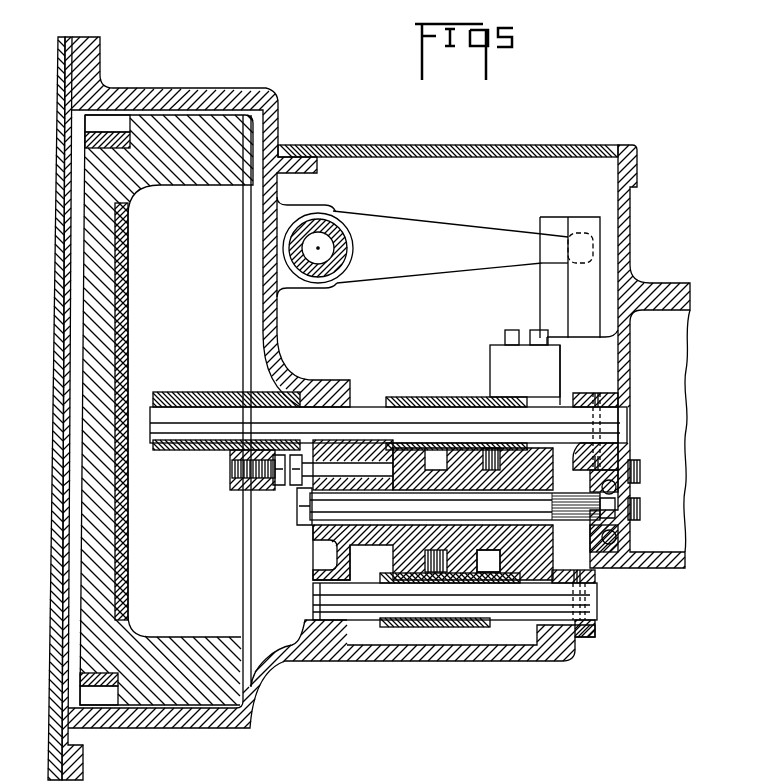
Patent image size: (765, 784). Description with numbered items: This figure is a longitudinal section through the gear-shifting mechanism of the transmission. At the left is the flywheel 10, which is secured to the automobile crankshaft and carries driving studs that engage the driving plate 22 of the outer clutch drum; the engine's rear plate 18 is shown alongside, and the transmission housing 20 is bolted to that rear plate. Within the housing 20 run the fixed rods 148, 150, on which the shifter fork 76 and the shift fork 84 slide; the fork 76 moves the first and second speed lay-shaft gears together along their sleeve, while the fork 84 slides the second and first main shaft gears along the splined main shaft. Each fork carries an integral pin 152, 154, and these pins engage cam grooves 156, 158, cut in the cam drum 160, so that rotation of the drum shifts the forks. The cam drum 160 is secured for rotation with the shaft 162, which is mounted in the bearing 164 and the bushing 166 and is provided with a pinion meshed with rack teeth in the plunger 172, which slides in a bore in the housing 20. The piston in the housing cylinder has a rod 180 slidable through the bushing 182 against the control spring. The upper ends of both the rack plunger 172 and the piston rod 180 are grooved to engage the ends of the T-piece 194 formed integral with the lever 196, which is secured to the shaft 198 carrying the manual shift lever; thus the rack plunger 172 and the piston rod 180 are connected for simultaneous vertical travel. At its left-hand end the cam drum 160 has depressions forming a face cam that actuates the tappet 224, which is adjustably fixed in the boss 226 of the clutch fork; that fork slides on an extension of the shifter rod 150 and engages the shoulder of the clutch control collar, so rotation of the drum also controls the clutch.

The flywheel 10 is at (163, 643).
The rear plate 18 is at (57, 255).
The transmission housing 20 is at (158, 92).
The driving plate 22 is at (122, 555).
The shifter fork 76 is at (411, 624).
The shift fork 84 is at (392, 397).
The fixed rod 148 is at (599, 609).
The fixed rod 150 is at (178, 413).
The pin 152 is at (432, 563).
The pin 154 is at (496, 445).
The cam groove 156 is at (433, 453).
The cam groove 158 is at (490, 563).
The cam drum 160 is at (538, 548).
The shaft 162 is at (334, 550).
The bearing 164 is at (630, 540).
The bushing 166 is at (333, 527).
The plunger 172 is at (588, 286).
The rod 180 is at (541, 292).
The bushing 182 is at (505, 336).
The T-piece 194 is at (552, 235).
The lever 196 is at (421, 228).
The shaft 198 is at (341, 232).
The tappet 224 is at (303, 488).
The boss 226 is at (232, 449).